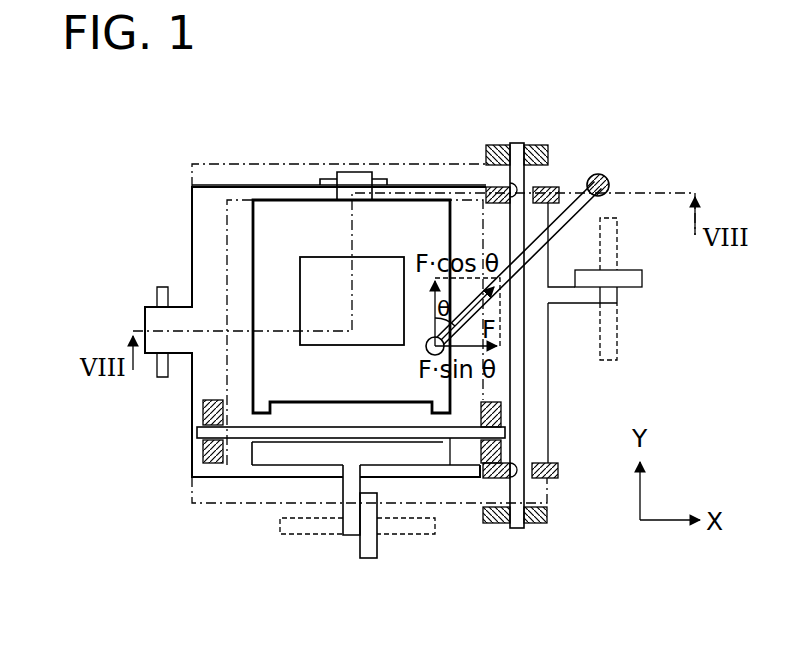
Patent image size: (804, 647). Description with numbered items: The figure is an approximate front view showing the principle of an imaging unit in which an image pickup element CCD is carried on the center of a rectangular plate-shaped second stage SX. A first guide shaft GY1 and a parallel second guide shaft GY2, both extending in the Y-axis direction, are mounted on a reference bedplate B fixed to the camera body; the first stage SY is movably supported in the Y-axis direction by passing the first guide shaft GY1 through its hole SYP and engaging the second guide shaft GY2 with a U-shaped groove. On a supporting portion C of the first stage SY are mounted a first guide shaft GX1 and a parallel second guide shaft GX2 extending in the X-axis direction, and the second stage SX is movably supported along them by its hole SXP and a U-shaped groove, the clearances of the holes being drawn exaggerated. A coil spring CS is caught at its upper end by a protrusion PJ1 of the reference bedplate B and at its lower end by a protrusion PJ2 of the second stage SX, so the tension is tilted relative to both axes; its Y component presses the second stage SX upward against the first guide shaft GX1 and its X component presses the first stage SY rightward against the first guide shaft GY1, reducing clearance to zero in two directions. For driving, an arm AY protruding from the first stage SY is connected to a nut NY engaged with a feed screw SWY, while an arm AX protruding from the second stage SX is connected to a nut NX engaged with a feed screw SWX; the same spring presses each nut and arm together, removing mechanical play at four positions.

The second guide shaft GX2 is at (336, 178).
The second stage SX is at (293, 200).
The first stage SY is at (388, 185).
The hole SYP is at (508, 190).
The reference bedplate B is at (520, 143).
The protrusion PJ1 is at (609, 184).
The coil spring CS is at (568, 222).
The nut NY is at (642, 278).
The arm AY is at (617, 295).
The feed screw SWY is at (617, 348).
The image pickup element CCD is at (300, 272).
The second guide shaft GY2 is at (157, 295).
The protrusion PJ2 is at (427, 346).
The supporting portion C is at (226, 395).
The first guide shaft GY1 is at (524, 398).
The hole SXP is at (258, 438).
The first guide shaft GX1 is at (287, 442).
The arm AX is at (349, 535).
The nut NX is at (370, 558).
The feed screw SWX is at (422, 534).